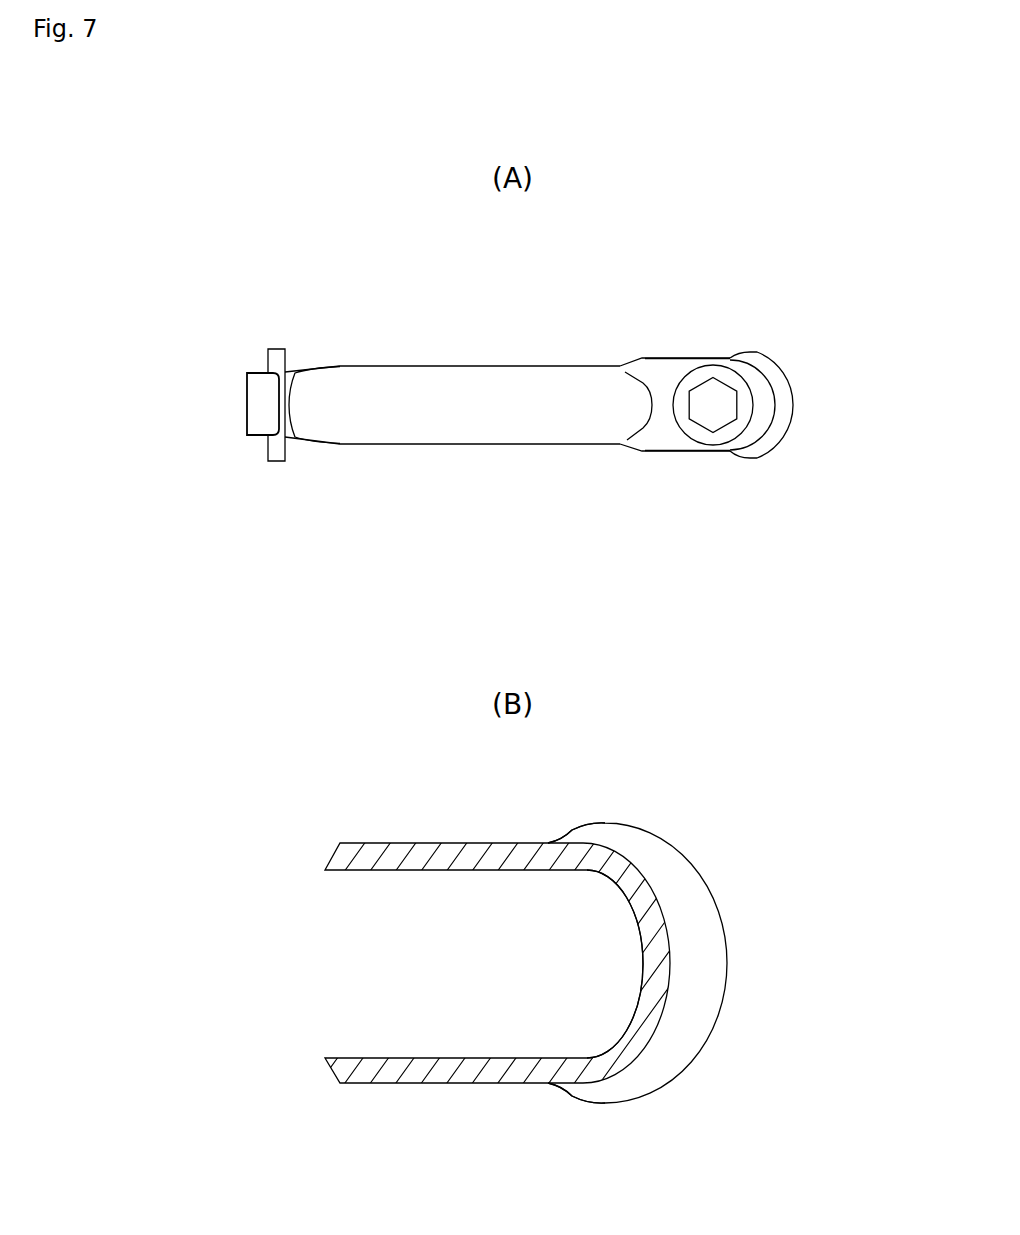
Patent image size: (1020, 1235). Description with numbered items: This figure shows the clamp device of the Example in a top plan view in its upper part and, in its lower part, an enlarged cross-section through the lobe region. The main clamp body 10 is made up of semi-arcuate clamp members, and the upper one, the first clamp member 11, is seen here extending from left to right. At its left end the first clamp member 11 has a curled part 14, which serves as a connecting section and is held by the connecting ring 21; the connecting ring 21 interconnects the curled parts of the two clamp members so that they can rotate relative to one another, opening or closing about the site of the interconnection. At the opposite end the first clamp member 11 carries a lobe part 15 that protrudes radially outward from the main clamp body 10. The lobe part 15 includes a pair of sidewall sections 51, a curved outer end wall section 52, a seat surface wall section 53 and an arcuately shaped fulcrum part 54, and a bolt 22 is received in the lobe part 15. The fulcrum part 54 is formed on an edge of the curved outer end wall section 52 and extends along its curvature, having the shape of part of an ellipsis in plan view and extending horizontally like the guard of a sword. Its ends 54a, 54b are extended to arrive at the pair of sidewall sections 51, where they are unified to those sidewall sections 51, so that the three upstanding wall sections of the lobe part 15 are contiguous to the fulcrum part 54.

The main clamp body 10 is at (510, 728).
The first clamp member 11 is at (445, 377).
The curled part 14 is at (262, 407).
The lobe part 15 is at (667, 440).
The connecting ring 21 is at (278, 358).
The bolt 22 is at (713, 410).
The sidewall section 51 is at (708, 357).
The curved outer end wall section 52 is at (773, 410).
The seat surface wall section 53 is at (667, 365).
The fulcrum part 54 is at (780, 382).
The fulcrum part end 54a is at (577, 833).
The fulcrum part end 54b is at (590, 1092).